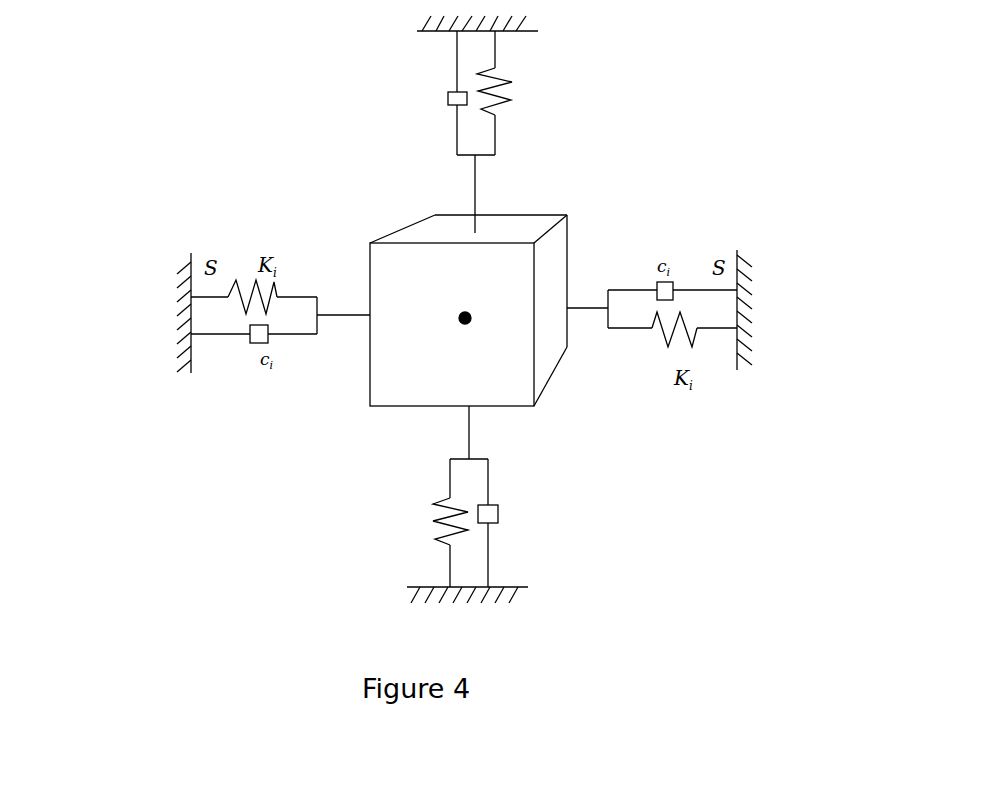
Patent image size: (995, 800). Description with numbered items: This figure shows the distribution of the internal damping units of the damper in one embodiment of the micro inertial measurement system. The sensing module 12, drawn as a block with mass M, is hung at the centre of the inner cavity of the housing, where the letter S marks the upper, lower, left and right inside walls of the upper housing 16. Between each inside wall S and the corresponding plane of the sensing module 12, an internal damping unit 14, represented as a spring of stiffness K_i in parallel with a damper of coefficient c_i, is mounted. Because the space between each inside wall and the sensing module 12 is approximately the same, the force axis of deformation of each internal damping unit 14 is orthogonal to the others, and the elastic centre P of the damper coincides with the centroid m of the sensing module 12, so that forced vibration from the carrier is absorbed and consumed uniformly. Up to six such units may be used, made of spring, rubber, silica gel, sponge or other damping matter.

The sensing module 12 is at (372, 281).
The internal damping unit 14 is at (522, 85).
The upper housing 16 is at (521, 531).